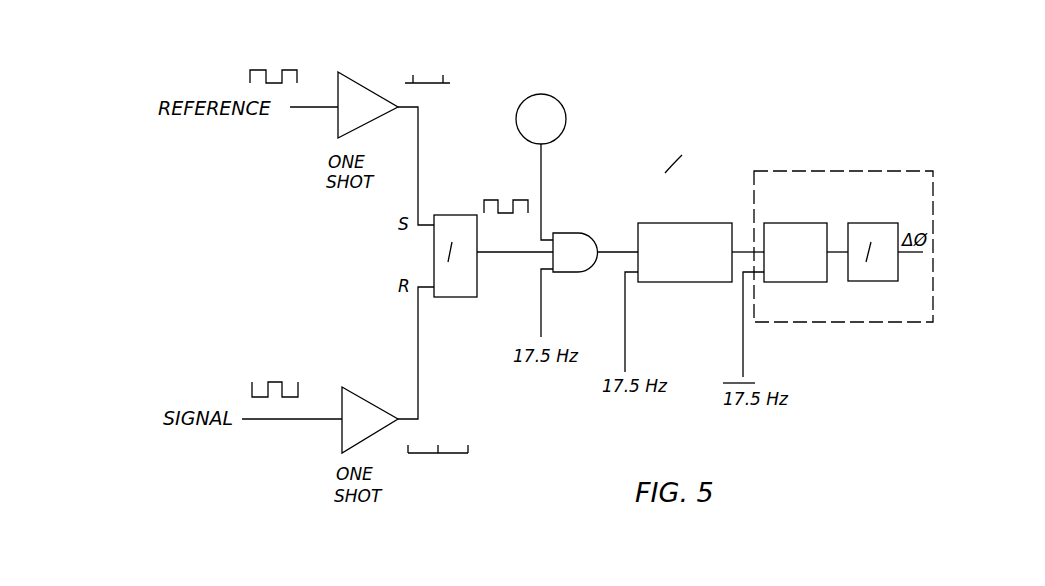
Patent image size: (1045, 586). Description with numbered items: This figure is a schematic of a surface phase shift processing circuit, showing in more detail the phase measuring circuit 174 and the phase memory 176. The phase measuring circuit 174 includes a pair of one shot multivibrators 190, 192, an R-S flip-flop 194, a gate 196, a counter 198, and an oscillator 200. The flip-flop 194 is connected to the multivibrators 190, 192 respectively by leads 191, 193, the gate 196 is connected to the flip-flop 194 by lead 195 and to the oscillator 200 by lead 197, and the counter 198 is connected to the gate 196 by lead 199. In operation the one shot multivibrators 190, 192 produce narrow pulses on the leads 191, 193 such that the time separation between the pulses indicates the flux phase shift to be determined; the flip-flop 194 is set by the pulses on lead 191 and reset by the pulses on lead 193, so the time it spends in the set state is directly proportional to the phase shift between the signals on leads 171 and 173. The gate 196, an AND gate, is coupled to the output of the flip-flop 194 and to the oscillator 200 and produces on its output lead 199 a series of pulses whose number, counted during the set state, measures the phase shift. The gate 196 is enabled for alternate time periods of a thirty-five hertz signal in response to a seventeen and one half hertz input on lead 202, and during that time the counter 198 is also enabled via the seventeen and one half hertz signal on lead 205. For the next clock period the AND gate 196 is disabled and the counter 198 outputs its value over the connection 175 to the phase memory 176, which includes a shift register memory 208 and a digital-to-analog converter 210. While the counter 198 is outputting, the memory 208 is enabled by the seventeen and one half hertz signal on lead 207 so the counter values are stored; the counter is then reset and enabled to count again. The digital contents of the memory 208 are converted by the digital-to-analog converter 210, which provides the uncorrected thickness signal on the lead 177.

The lead 171 is at (310, 110).
The one shot multivibrator 190 is at (357, 80).
The lead 191 is at (419, 152).
The R-S flip-flop 194 is at (452, 215).
The lead 173 is at (298, 423).
The one shot multivibrator 192 is at (367, 397).
The lead 193 is at (419, 355).
The lead 195 is at (509, 257).
The oscillator 200 is at (567, 127).
The lead 197 is at (542, 178).
The gate 196 is at (577, 275).
The lead 202 is at (542, 323).
The lead 199 is at (611, 248).
The counter 198 is at (686, 222).
The phase measuring circuit 174 is at (687, 153).
The lead 205 is at (626, 332).
The counter output line 175 is at (745, 249).
The lead 207 is at (744, 352).
The phase memory 176 is at (835, 168).
The shift register memory 208 is at (798, 283).
The digital-to-analog converter 210 is at (873, 223).
The lead 177 is at (913, 253).